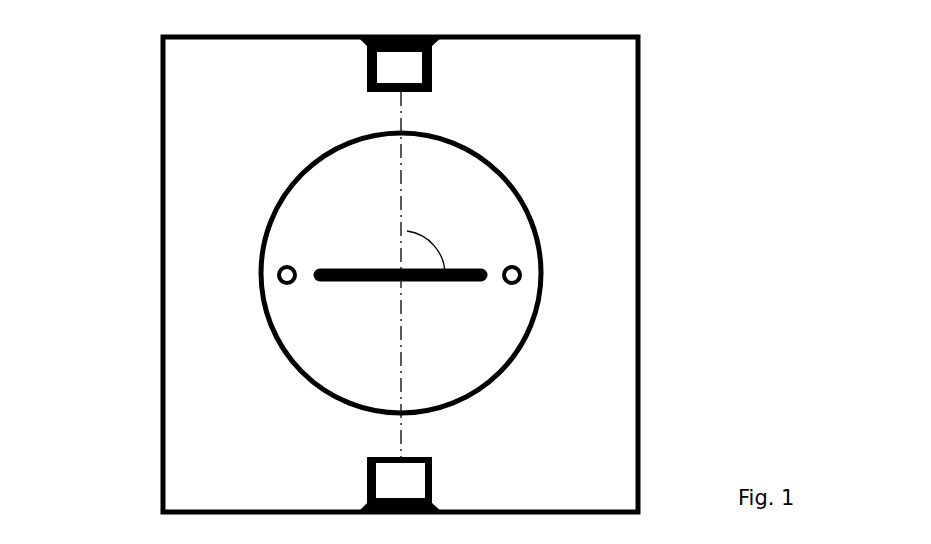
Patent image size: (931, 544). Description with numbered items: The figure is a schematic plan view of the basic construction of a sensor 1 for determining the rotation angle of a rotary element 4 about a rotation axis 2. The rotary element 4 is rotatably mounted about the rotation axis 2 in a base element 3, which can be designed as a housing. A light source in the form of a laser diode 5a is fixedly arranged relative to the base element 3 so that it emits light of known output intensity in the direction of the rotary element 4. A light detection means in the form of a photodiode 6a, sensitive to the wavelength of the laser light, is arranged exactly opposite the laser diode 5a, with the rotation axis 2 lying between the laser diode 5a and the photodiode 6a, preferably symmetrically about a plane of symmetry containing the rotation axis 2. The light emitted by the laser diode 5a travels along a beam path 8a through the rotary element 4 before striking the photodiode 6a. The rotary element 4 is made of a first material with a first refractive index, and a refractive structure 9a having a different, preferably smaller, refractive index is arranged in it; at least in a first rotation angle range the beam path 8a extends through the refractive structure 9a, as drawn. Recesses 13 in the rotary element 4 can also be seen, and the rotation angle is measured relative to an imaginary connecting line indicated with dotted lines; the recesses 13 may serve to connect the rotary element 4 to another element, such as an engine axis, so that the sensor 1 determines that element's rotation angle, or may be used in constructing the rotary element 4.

The sensor 1 is at (120, 51).
The rotation axis 2 is at (289, 273).
The base element 3 is at (188, 347).
The rotary element 4 is at (262, 300).
The laser diode 5a is at (430, 66).
The photodiode 6a is at (570, 456).
The beam path 8a is at (206, 278).
The refractive structure 9a is at (547, 323).
The recesses 13 is at (522, 277).